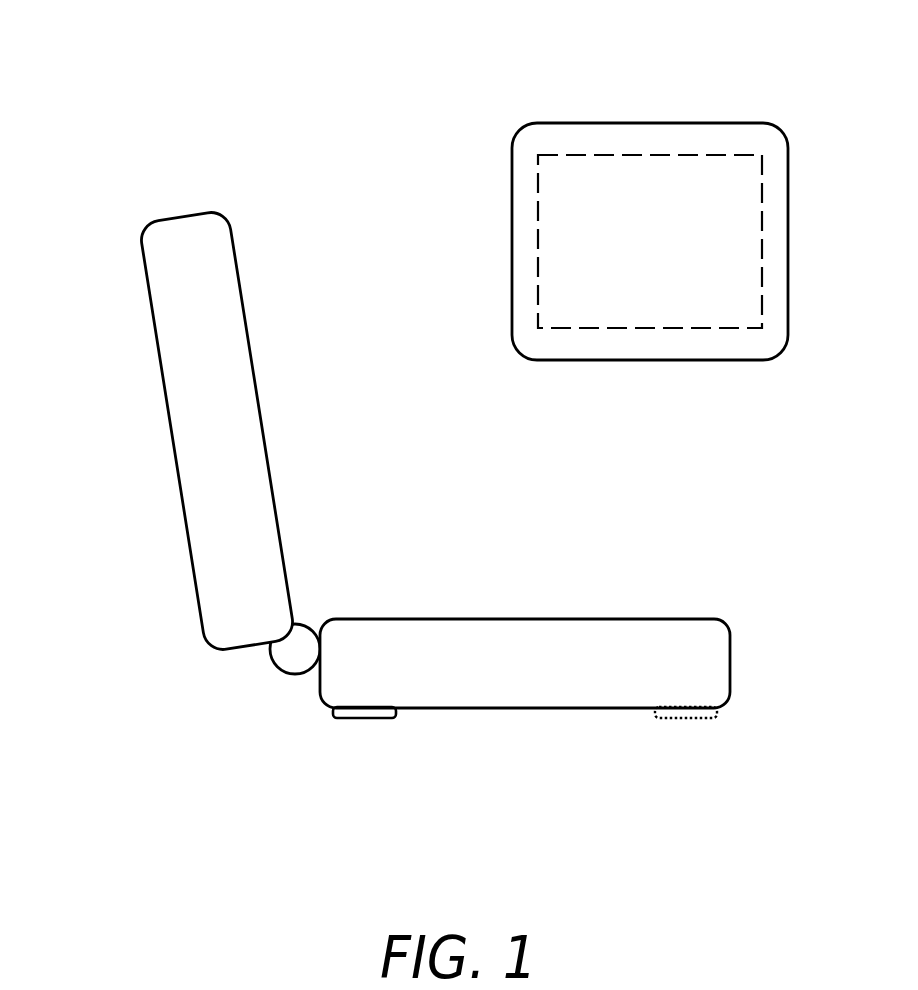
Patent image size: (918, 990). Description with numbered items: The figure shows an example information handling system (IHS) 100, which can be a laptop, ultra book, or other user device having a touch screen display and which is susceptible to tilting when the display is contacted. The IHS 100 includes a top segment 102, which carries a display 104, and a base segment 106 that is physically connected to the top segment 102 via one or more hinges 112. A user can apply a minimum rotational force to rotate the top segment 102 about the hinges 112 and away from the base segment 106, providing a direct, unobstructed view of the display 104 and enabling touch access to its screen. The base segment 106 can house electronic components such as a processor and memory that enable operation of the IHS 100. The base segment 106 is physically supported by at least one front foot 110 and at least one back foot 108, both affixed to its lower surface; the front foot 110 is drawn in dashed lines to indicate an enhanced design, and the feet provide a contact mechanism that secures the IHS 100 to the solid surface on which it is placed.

The information handling system 100 is at (242, 144).
The top segment 102 is at (685, 106).
The display 104 is at (555, 203).
The base segment 106 is at (540, 616).
The back foot 108 is at (352, 781).
The front foot 110 is at (669, 777).
The hinges 112 is at (292, 678).